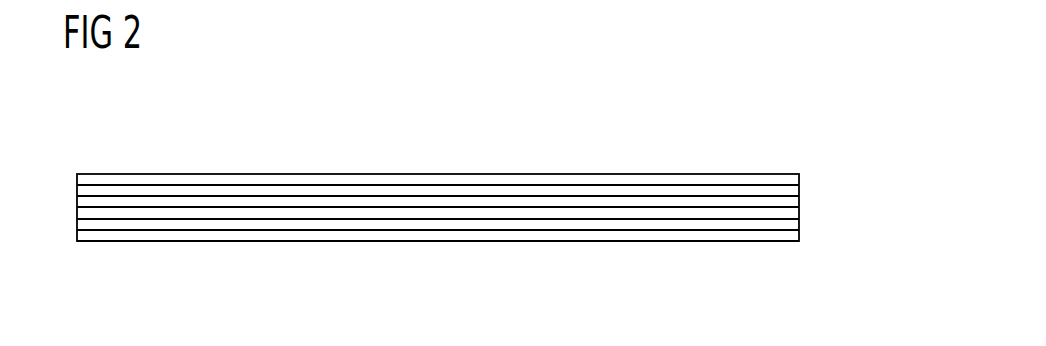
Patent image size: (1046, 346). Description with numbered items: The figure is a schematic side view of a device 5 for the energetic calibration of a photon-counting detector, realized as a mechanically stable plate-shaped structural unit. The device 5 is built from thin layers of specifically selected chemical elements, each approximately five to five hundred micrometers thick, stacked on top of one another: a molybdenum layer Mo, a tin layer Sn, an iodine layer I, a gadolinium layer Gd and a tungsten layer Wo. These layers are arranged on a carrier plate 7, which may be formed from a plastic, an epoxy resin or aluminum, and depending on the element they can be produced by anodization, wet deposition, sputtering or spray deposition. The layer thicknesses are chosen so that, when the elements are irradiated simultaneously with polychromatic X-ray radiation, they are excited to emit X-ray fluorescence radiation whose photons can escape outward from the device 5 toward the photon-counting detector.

The device 5 is at (196, 137).
The carrier plate 7 is at (703, 237).
The molybdenum layer Mo is at (738, 180).
The tin layer Sn is at (795, 190).
The iodine layer I is at (795, 202).
The gadolinium layer Gd is at (795, 213).
The tungsten layer Wo is at (779, 226).